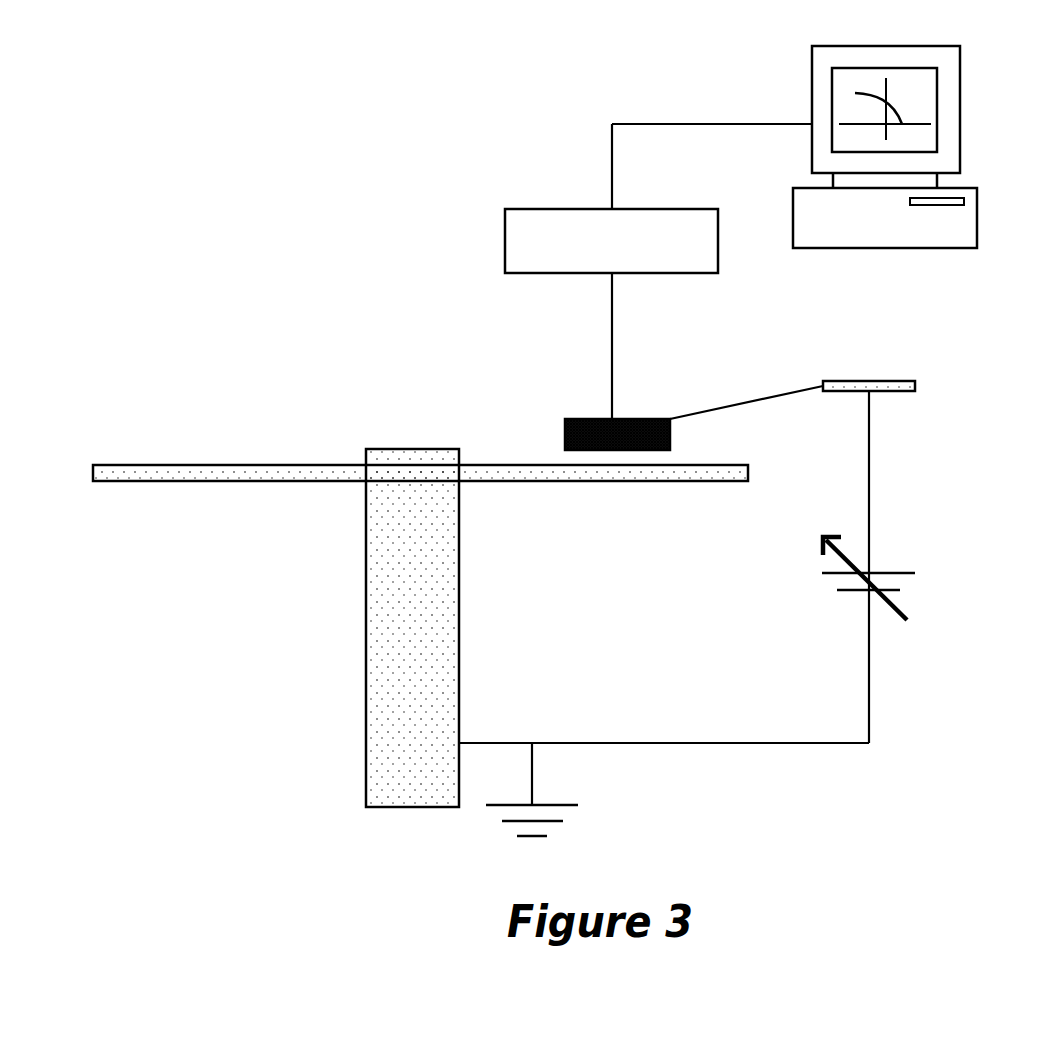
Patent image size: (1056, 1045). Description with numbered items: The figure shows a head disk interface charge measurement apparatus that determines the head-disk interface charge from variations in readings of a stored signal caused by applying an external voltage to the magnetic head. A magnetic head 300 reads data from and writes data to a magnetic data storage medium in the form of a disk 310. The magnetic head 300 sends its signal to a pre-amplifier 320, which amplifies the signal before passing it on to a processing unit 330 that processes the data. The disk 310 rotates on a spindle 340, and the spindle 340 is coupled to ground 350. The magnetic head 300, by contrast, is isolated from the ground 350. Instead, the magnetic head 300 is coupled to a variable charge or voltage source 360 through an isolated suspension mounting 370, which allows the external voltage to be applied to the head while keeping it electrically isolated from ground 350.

The magnetic head 300 is at (587, 420).
The disk 310 is at (310, 465).
The pre-amplifier 320 is at (527, 208).
The processing unit 330 is at (812, 93).
The spindle 340 is at (367, 623).
The ground 350 is at (553, 836).
The variable charge or voltage source 360 is at (905, 582).
The isolated suspension mounting 370 is at (908, 381).